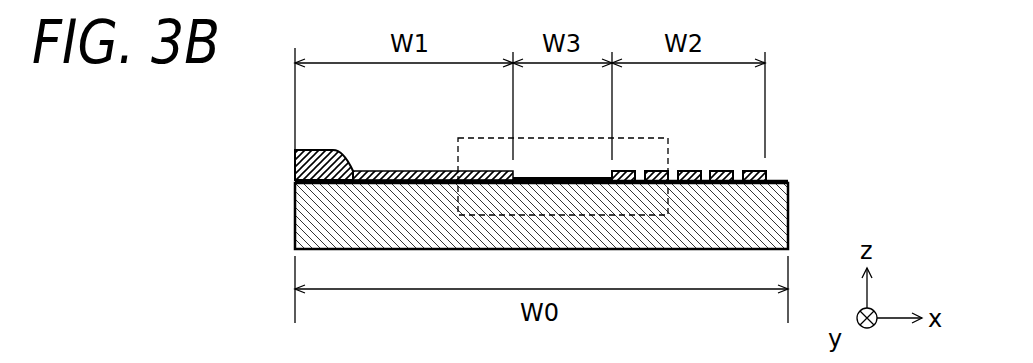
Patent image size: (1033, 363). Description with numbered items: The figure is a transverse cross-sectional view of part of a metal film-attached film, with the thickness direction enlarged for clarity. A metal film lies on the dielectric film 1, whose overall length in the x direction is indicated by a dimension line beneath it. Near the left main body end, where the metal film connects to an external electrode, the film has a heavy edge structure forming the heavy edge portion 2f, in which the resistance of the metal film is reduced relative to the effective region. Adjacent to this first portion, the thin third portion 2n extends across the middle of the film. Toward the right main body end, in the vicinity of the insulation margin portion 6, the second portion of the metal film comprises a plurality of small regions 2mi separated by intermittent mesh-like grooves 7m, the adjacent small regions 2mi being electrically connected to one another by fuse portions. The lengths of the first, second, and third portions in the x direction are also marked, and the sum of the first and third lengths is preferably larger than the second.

The dielectric film 1 is at (327, 222).
The insulation margin portion 6 is at (775, 183).
The heavy edge portion 2f is at (295, 168).
The third portion 2n is at (568, 173).
The small regions 2mi is at (657, 170).
The grooves 7m is at (738, 170).